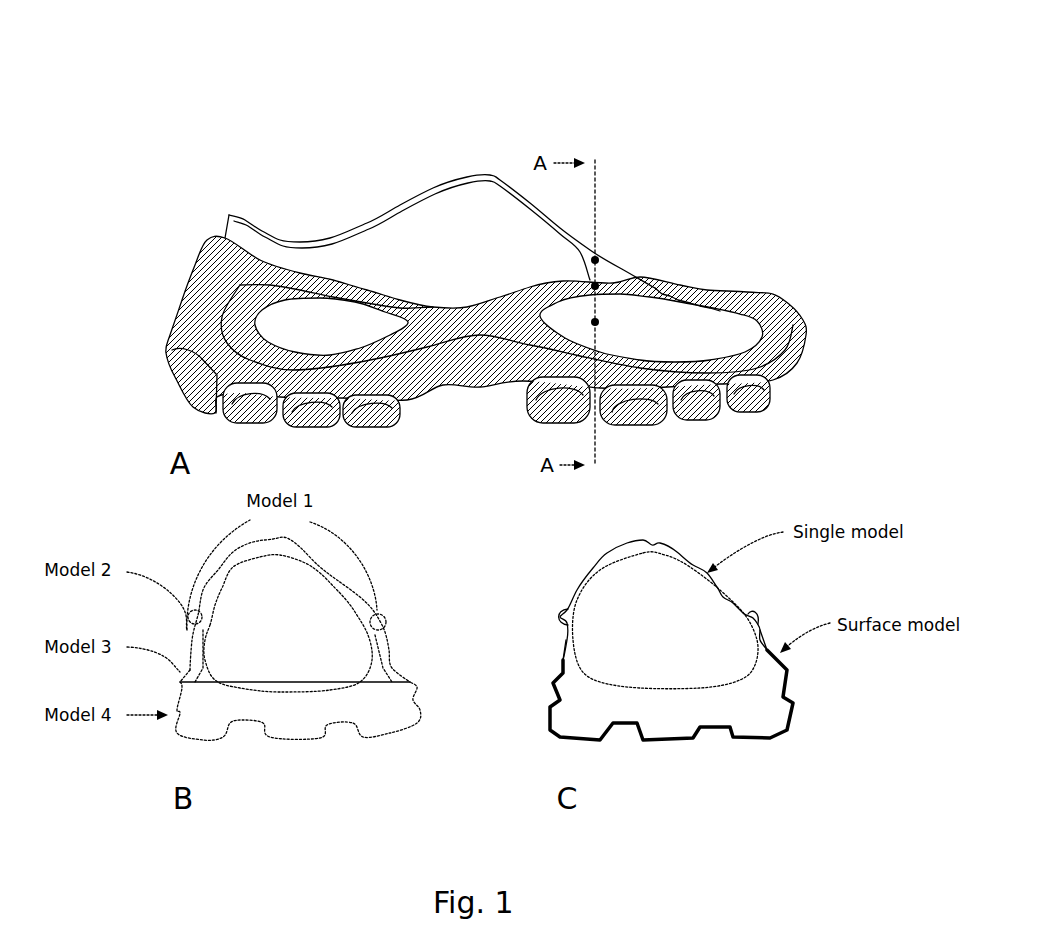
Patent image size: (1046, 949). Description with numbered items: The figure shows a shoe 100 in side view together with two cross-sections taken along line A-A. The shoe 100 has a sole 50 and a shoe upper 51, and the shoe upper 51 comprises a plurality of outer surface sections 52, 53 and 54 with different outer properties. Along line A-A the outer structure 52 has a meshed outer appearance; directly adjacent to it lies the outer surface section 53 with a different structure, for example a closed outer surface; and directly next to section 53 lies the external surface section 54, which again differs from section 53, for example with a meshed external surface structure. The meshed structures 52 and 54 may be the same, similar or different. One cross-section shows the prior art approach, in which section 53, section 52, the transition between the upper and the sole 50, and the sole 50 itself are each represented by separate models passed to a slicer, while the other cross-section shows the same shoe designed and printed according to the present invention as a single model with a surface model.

In FIG. 1A, the shoe 100 is at (285, 148).
In FIG. 1A, the sole 50 is at (810, 380).
In FIG. 1B, the sole 50 is at (377, 720).
In FIG. 1C, the sole 50 is at (760, 723).
In FIG. 1A, the shoe upper 51 is at (718, 240).
In FIG. 1A, the outer structure 52 is at (595, 322).
In FIG. 1B, the outer structure 52 is at (173, 638).
In FIG. 1C, the outer structure 52 is at (548, 642).
In FIG. 1A, the outer surface section 53 is at (595, 286).
In FIG. 1B, the outer surface section 53 is at (180, 595).
In FIG. 1C, the outer surface section 53 is at (551, 599).
In FIG. 1A, the external surface section 54 is at (595, 260).
In FIG. 1B, the external surface section 54 is at (208, 559).
In FIG. 1C, the external surface section 54 is at (586, 561).